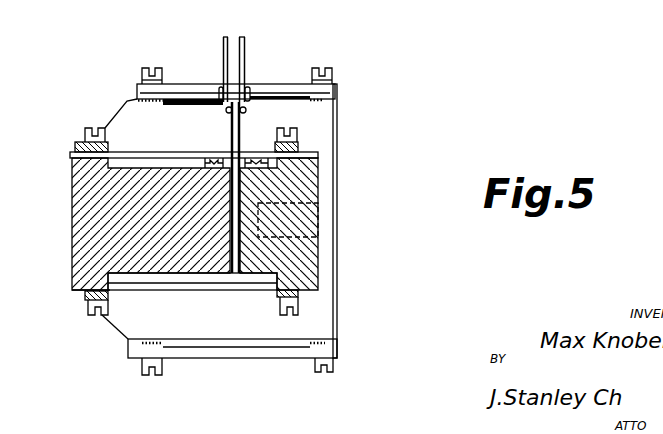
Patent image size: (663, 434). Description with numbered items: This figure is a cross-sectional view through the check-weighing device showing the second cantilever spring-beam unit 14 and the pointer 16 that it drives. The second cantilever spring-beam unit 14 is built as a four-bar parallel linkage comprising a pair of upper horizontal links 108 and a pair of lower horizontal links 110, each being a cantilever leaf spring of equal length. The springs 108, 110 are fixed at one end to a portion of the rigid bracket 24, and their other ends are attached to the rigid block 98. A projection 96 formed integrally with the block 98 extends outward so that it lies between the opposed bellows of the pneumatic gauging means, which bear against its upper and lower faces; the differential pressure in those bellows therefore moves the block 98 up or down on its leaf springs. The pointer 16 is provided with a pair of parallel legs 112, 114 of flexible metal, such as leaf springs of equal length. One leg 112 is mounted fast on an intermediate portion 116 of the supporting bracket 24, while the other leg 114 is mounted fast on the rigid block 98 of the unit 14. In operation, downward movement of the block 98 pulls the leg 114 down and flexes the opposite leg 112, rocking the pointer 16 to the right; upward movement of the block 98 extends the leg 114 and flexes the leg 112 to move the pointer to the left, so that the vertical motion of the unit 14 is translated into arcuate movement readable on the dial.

The second cantilever spring-beam unit 14 is at (318, 138).
The pointer 16 is at (247, 52).
The rigid bracket 24 is at (103, 127).
The projection 96 is at (300, 238).
The rigid block 98 is at (318, 182).
The upper horizontal links 108 is at (182, 150).
The lower horizontal links 110 is at (187, 288).
The leg 112 is at (232, 136).
The leg 114 is at (243, 140).
The intermediate portion 116 is at (168, 185).